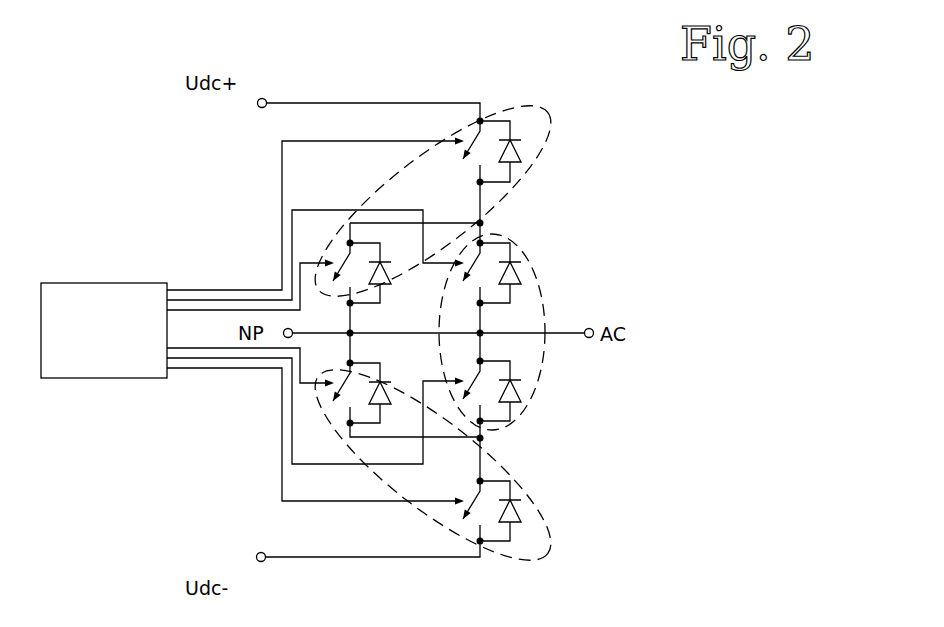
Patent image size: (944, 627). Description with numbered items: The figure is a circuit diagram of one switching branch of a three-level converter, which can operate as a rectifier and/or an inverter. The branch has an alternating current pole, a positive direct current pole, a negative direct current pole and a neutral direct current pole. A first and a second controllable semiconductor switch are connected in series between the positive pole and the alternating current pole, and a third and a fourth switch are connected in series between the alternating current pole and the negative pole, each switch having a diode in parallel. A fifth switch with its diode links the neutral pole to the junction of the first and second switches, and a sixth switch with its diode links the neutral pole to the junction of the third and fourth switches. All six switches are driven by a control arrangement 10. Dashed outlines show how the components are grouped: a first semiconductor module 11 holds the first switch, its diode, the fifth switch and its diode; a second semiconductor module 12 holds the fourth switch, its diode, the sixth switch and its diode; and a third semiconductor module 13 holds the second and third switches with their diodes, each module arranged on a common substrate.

The control arrangement 10 is at (106, 283).
The first switching-branch-specific semiconductor module 11 is at (545, 130).
The second switching-branch-specific semiconductor module 12 is at (545, 530).
The third switching-branch-specific semiconductor module 13 is at (545, 298).